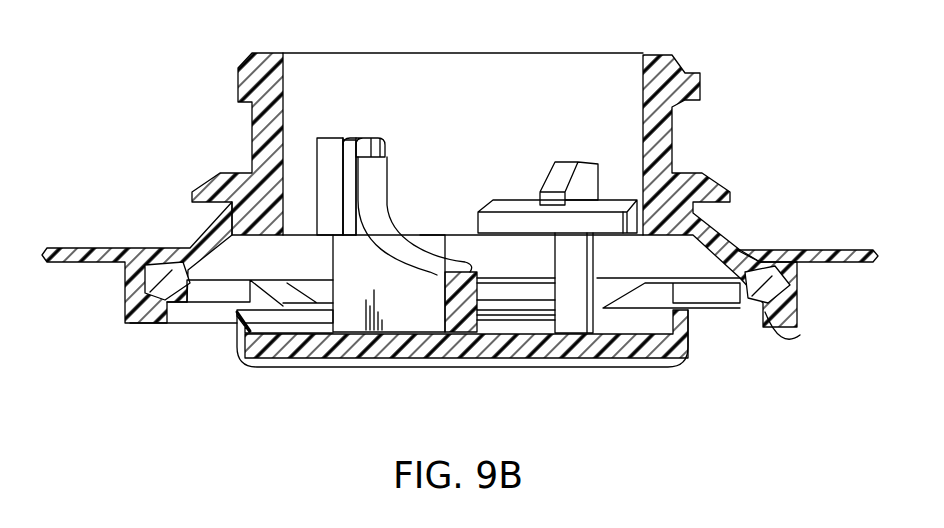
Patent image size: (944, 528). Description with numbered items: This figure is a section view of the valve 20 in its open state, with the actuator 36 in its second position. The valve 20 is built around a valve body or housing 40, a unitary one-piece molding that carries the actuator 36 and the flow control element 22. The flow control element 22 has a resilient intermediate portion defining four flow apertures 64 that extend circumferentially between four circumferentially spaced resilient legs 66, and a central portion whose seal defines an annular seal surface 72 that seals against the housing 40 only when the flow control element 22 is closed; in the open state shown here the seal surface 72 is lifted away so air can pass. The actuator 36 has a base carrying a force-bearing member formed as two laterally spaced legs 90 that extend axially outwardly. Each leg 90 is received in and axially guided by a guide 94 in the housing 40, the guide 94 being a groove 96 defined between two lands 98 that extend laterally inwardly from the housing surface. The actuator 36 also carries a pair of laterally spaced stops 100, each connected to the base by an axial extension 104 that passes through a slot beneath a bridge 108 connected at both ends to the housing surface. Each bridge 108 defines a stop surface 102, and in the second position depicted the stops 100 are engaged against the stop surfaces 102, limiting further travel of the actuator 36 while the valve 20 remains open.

The valve 20 is at (144, 150).
The flow control element 22 is at (203, 307).
The actuator 36 is at (408, 348).
The valve body or housing 40 is at (824, 245).
The flow apertures 64 is at (233, 285).
The resilient legs 66 is at (277, 292).
The annular seal surface 72 is at (268, 316).
The legs 90 is at (378, 207).
The guide 94 is at (362, 125).
The groove 96 is at (358, 137).
The lands 98 is at (330, 167).
The stops 100 is at (592, 168).
The stop surfaces 102 is at (517, 205).
The axial extension 104 is at (573, 263).
The bridge 108 is at (612, 222).